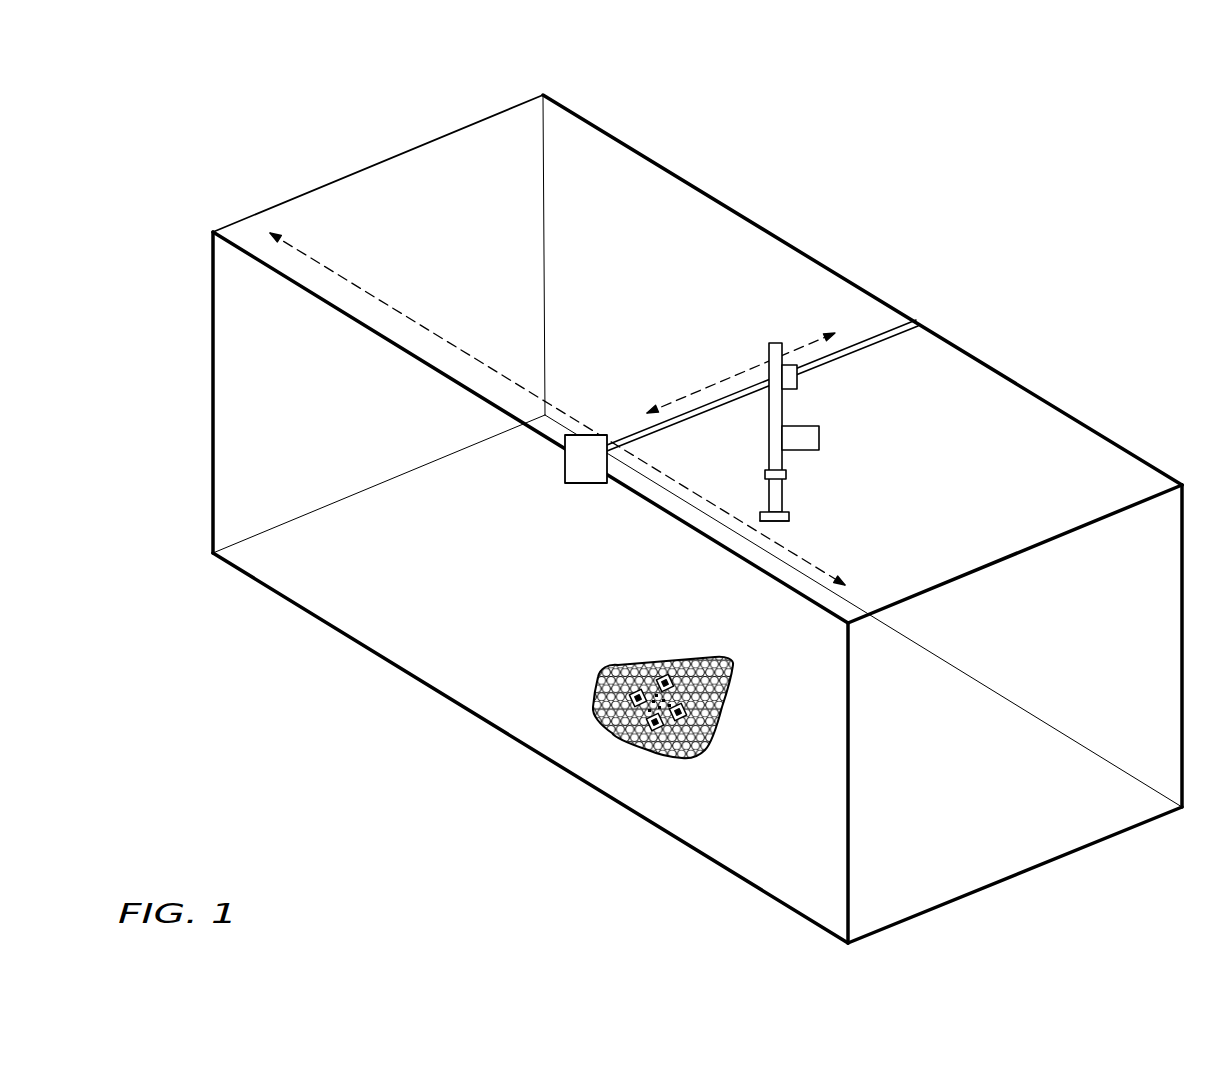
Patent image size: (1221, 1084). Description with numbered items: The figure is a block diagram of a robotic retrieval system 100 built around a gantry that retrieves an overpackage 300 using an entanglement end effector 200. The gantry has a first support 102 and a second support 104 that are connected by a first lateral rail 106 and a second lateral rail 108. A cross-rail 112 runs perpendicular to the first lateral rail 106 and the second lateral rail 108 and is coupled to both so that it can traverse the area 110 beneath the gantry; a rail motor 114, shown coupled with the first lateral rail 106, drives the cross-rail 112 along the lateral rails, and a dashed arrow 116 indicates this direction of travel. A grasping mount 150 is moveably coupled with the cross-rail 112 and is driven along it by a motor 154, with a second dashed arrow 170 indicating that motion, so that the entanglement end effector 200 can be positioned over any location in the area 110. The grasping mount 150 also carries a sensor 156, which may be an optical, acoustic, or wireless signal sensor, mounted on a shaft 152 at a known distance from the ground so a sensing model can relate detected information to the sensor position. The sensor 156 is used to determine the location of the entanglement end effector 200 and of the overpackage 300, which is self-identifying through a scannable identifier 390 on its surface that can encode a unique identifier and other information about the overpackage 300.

The robotic retrieval system 100 is at (1113, 170).
The first support 102 is at (377, 158).
The second support 104 is at (1037, 540).
The first lateral rail 106 is at (212, 232).
The second lateral rail 108 is at (543, 95).
The area 110 is at (393, 468).
The cross-rail 112 is at (878, 347).
The rail motor 114 is at (582, 485).
The travel direction 116 is at (410, 313).
The grasping mount 150 is at (794, 401).
The shaft 152 is at (768, 415).
The motor 154 is at (792, 388).
The sensor 156 is at (813, 450).
The scan direction 170 is at (695, 393).
The entanglement end effector 200 is at (793, 498).
The overpackage 300 is at (635, 773).
The scannable identifier 390 is at (660, 665).